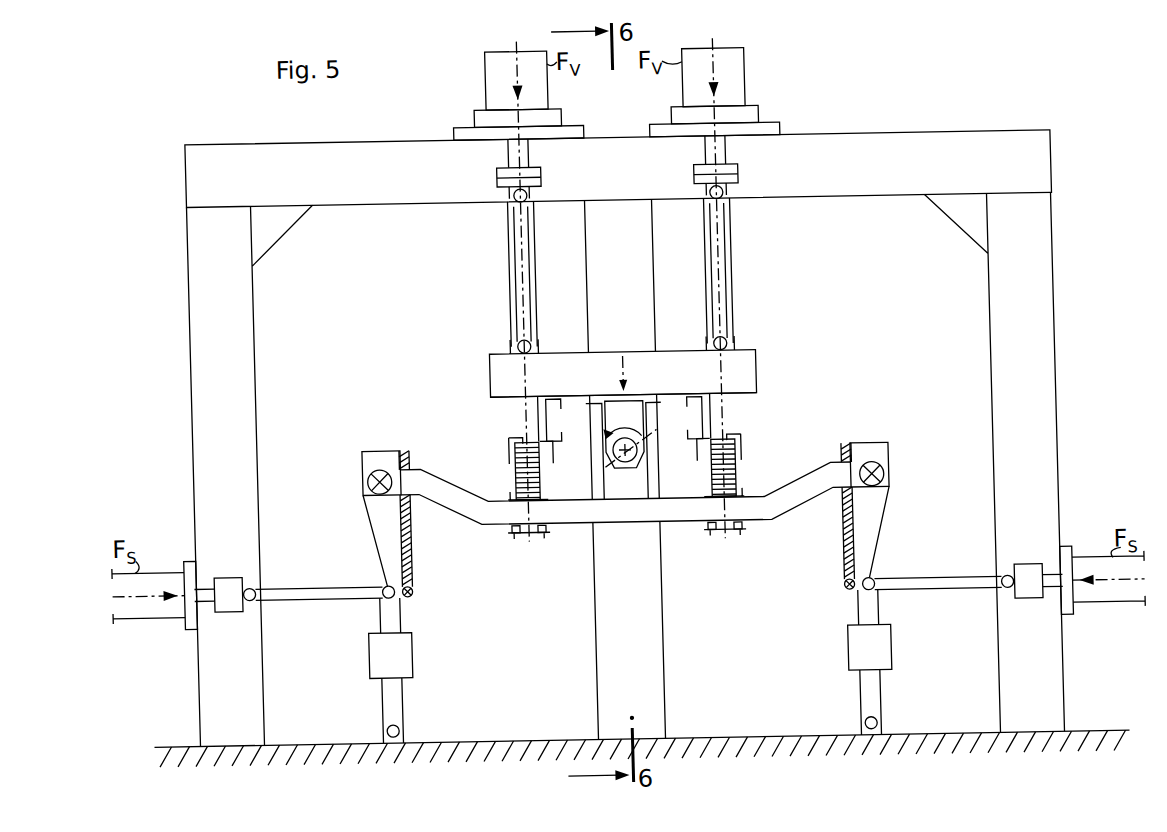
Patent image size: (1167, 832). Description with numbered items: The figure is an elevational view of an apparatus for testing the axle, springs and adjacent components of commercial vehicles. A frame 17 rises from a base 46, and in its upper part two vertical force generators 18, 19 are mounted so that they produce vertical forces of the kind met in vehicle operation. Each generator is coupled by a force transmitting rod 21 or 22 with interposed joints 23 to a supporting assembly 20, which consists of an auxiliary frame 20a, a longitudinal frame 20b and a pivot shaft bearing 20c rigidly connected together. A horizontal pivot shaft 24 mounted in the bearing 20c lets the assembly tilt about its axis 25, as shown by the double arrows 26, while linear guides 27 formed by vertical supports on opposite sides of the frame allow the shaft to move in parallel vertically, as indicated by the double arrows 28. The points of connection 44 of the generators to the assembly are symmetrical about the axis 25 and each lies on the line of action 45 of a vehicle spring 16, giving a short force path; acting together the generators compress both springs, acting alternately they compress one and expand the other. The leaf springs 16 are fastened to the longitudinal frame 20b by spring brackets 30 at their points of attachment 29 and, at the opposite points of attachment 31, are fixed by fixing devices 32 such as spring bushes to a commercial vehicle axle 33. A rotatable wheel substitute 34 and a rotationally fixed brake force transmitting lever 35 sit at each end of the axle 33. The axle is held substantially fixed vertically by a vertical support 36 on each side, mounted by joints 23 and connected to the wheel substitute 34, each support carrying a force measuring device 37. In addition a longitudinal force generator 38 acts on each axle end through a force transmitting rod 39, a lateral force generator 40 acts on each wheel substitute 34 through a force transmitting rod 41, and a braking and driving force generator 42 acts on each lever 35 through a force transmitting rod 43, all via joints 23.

The commercial vehicle springs 16 is at (515, 466).
The frame 17 is at (962, 137).
The vertical force generator 18 is at (495, 64).
The vertical force generator 19 is at (754, 64).
The supporting assembly 20 is at (762, 375).
The auxiliary frame 20a is at (492, 372).
The longitudinal frame 20b is at (538, 416).
The pivot shaft bearing 20c is at (590, 427).
The force transmitting rod 21 is at (514, 283).
The force transmitting rod 22 is at (740, 279).
The joints 23 is at (520, 192).
The pivot shaft 24 is at (617, 460).
The axis 25 is at (638, 444).
The double arrows 26 is at (628, 402).
The linear guide 27 is at (640, 247).
The double arrows 28 is at (625, 353).
The points of attachment 29 is at (509, 440).
The spring brackets 30 is at (552, 451).
The points of attachment 31 is at (510, 496).
The fixing devices 32 is at (517, 537).
The commercial vehicle axle 33 is at (560, 523).
The wheel substitute 34 is at (365, 449).
The brake force transmitting lever 35 is at (410, 540).
The vertical support 36 is at (376, 612).
The force measuring device 37 is at (225, 571).
The longitudinal force generator 38 is at (630, 479).
The force transmitting rod 39 is at (367, 478).
The lateral force generator 40 is at (152, 612).
The force transmitting rod 41 is at (300, 583).
The braking and driving force generator 42 is at (629, 601).
The force transmitting rod 43 is at (409, 588).
The points of connection 44 is at (541, 343).
The line of action 45 is at (514, 233).
The base 46 is at (452, 752).